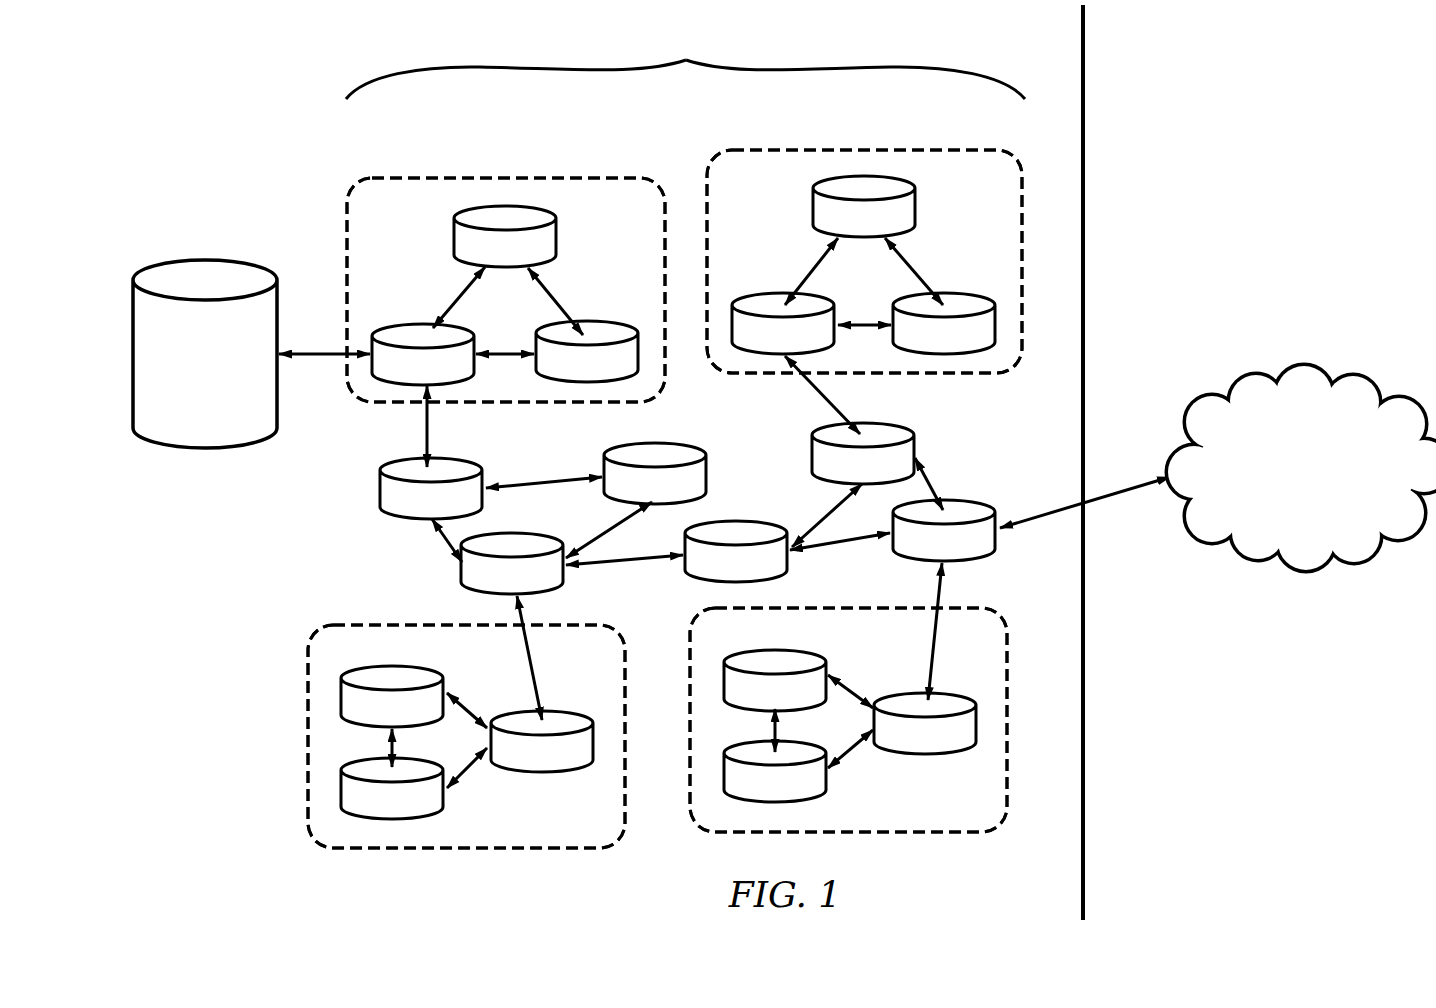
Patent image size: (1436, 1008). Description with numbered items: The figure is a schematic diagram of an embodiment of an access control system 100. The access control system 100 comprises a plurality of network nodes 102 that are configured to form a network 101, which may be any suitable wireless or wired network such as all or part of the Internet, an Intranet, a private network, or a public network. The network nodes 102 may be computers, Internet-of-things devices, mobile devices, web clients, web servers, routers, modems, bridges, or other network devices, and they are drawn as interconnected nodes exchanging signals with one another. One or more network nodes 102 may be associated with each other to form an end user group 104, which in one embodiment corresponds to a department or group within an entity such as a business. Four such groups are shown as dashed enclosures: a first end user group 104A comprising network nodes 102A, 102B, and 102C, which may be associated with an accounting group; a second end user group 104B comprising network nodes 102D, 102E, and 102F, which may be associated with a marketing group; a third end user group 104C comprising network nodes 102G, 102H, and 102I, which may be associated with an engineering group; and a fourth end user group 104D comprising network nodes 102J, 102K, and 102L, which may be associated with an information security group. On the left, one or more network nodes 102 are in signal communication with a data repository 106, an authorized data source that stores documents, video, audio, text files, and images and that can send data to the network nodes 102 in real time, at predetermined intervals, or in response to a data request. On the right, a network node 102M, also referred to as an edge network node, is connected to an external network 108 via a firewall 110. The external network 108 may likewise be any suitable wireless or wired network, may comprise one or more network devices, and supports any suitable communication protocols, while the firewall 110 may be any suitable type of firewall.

The access control system 100 is at (262, 76).
The network 101 is at (685, 67).
The network node 102 is at (454, 466).
The network node 102A is at (404, 330).
The network node 102B is at (518, 215).
The network node 102C is at (614, 330).
The network node 102D is at (762, 298).
The network node 102E is at (870, 188).
The network node 102F is at (972, 298).
The network node 102G is at (430, 814).
The network node 102H is at (385, 672).
The network node 102I is at (584, 718).
The network node 102J is at (803, 800).
The network node 102K is at (784, 658).
The network node 102L is at (918, 755).
The network node 102M is at (960, 510).
The end user group 104 is at (393, 178).
The first end user group 104A is at (610, 178).
The second end user group 104B is at (971, 150).
The third end user group 104C is at (352, 848).
The fourth end user group 104D is at (728, 832).
The data repository 106 is at (200, 268).
The external network 108 is at (1239, 548).
The firewall 110 is at (1085, 72).